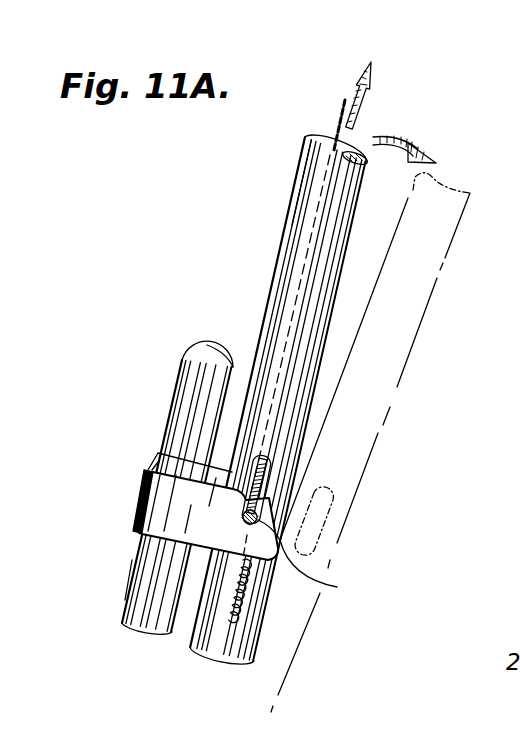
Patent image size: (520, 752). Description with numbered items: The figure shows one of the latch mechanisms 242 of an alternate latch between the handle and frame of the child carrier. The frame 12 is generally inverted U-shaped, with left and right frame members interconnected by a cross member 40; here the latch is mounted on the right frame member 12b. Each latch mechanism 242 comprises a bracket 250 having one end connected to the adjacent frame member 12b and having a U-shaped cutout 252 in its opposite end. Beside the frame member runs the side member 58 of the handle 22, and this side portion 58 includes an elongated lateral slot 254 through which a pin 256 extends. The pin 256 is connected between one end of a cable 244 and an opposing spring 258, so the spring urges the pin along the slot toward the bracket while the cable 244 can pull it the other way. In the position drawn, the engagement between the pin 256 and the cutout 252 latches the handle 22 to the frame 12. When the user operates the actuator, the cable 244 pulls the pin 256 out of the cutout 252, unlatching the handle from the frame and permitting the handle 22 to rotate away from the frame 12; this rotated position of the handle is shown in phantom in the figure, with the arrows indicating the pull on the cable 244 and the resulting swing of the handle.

The handle 22 is at (296, 167).
The frame 12 is at (170, 368).
The right frame member 12b is at (121, 616).
The cross member 40 is at (203, 351).
The side member of handle 58 is at (292, 219).
The latch mechanism 242 is at (128, 412).
The cable 244 is at (339, 140).
The bracket 250 is at (143, 508).
The U-shaped cutout 252 is at (322, 588).
The elongated lateral slot 254 is at (272, 474).
The pin 256 is at (255, 469).
The spring 258 is at (240, 625).